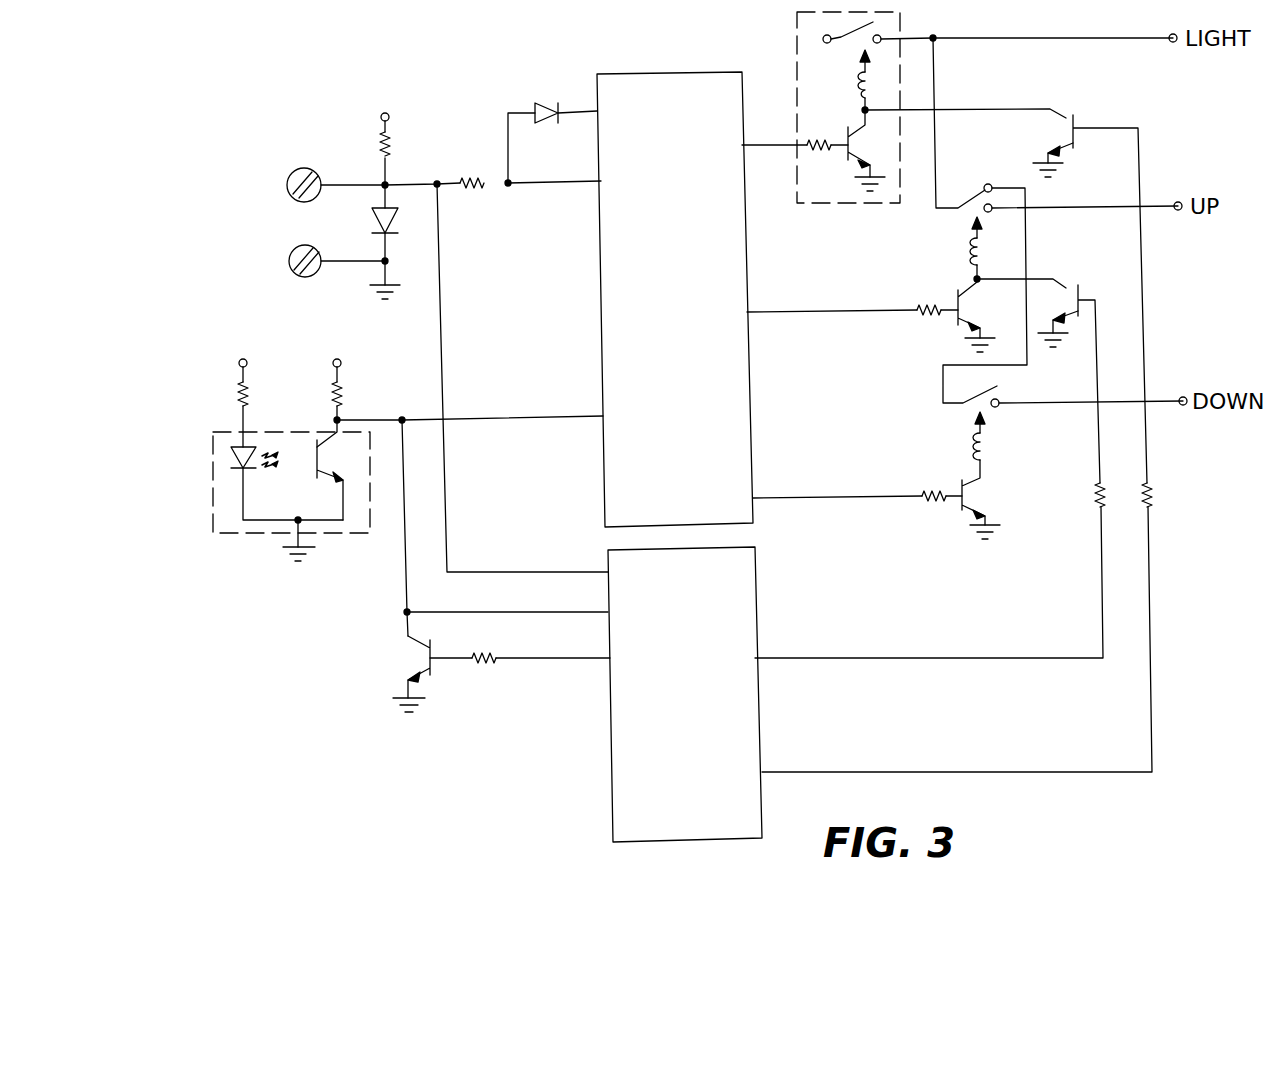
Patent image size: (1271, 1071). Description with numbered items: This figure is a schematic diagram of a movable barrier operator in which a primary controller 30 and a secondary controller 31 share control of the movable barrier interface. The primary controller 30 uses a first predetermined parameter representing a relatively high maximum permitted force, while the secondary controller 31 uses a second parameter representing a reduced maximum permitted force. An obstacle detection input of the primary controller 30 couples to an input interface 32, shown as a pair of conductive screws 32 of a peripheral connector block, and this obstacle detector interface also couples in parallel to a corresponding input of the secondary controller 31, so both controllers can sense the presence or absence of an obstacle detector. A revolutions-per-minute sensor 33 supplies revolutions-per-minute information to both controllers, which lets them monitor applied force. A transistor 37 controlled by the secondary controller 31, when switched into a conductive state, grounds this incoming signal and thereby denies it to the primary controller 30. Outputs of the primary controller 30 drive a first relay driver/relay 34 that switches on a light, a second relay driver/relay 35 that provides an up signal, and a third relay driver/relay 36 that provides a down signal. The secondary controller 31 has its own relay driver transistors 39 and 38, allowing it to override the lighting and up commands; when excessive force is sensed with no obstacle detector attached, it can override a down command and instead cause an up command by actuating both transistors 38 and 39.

The primary controller 30 is at (597, 74).
The secondary controller 31 is at (612, 550).
The input interface 32 is at (296, 245).
The revolutions-per-minute sensor 33 is at (230, 432).
The first relay driver/relay 34 is at (797, 57).
The second relay driver/relay 35 is at (945, 267).
The third relay driver/relay 36 is at (950, 456).
The transistor 37 is at (414, 655).
The relay driver transistor 38 is at (1065, 288).
The relay driver transistor 39 is at (1060, 115).